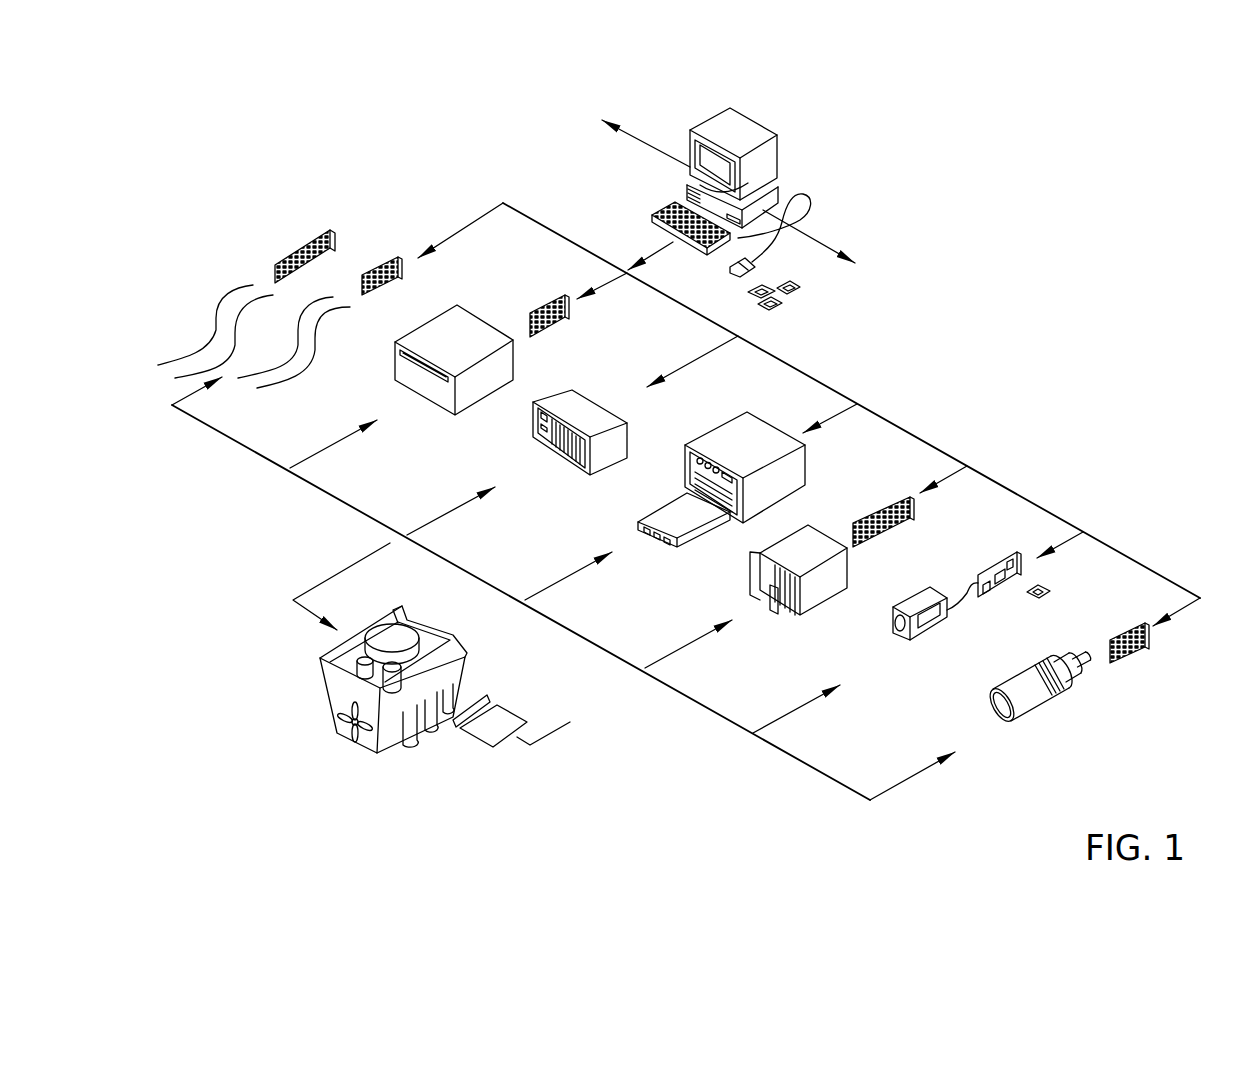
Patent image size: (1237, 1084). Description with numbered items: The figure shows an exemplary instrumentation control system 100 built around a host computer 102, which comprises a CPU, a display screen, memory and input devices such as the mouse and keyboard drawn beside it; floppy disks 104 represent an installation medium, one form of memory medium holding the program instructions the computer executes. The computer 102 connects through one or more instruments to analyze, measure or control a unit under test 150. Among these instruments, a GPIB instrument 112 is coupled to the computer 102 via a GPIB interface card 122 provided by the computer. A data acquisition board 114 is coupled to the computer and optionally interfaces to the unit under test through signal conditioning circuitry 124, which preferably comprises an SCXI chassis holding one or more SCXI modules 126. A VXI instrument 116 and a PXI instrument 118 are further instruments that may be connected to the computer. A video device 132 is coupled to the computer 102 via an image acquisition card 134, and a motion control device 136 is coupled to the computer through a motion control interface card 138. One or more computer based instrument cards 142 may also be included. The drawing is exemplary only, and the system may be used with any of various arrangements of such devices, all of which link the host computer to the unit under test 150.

The instrumentation control system 100 is at (1060, 162).
The host computer 102 is at (752, 135).
The floppy disks 104 is at (768, 315).
The GPIB instrument 112 is at (447, 333).
The data acquisition board 114 is at (900, 495).
The VXI instrument 116 is at (738, 440).
The PXI instrument 118 is at (566, 400).
The GPIB interface card 122 is at (548, 307).
The signal conditioning circuitry 124 is at (757, 585).
The SCXI modules 126 is at (777, 610).
The video device 132 is at (932, 597).
The image acquisition card 134 is at (995, 570).
The motion control device 136 is at (1027, 715).
The motion control interface card 138 is at (1135, 658).
The computer based instrument cards 142 is at (295, 250).
The unit under test 150 is at (333, 690).